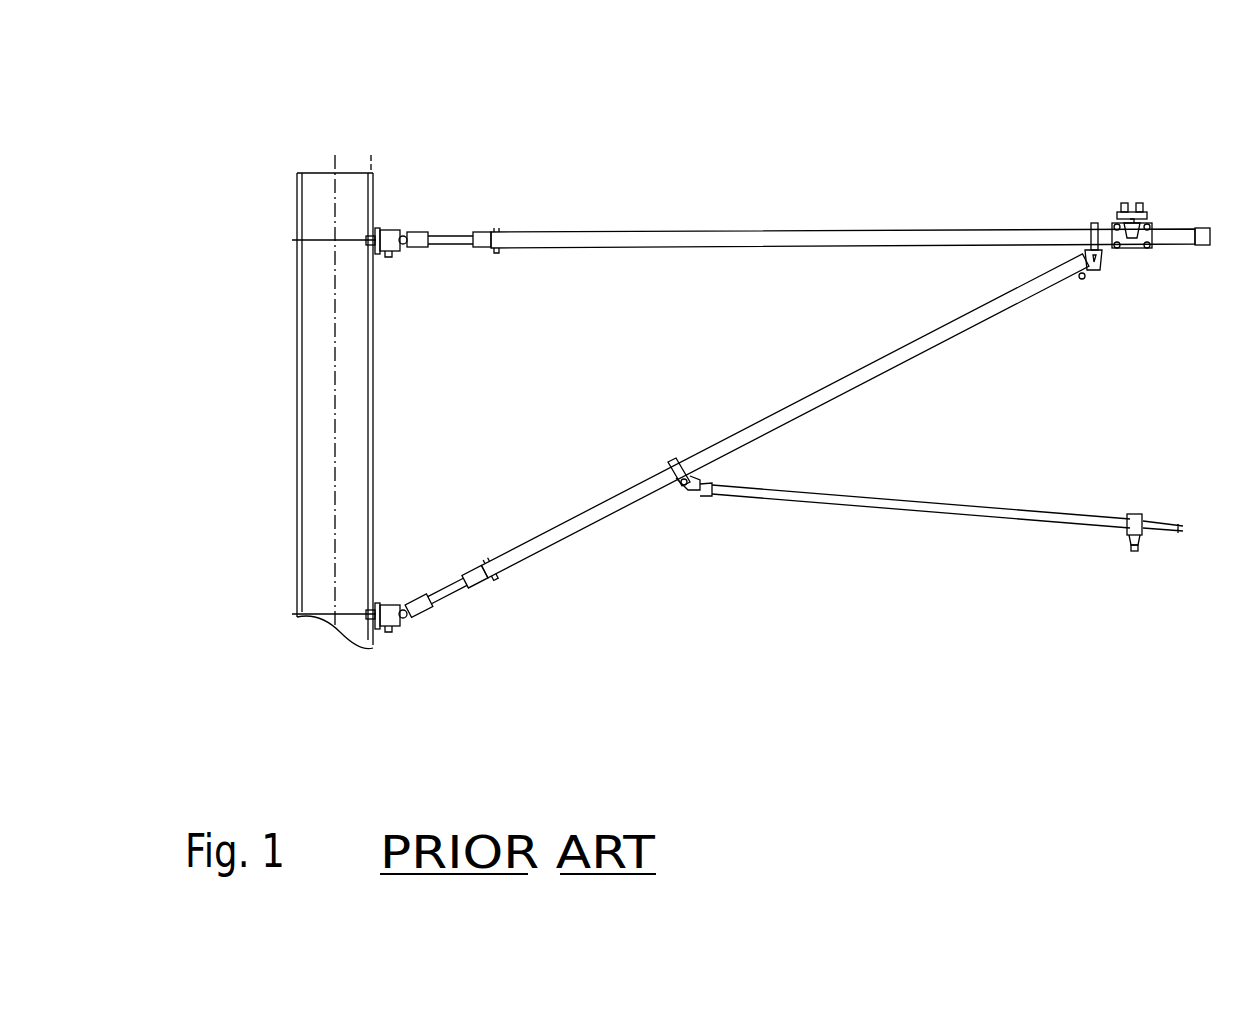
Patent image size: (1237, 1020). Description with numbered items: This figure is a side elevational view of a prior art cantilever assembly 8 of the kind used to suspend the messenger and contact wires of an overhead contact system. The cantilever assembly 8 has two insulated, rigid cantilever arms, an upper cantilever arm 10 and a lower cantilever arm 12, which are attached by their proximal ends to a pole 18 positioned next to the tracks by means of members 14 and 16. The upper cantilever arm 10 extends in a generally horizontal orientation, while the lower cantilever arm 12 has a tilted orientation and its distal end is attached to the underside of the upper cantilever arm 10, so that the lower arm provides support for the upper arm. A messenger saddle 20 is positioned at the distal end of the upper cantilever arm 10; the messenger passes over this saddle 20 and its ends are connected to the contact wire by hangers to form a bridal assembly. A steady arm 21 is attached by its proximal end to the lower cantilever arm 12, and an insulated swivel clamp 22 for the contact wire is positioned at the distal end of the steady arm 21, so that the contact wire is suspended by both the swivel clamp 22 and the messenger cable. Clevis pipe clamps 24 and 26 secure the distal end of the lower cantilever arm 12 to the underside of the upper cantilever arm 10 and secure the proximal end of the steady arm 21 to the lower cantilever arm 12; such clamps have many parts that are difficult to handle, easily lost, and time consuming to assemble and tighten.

The cantilever assembly 8 is at (550, 53).
The upper cantilever arm 10 is at (718, 231).
The lower cantilever arm 12 is at (800, 398).
The member 14 is at (383, 228).
The member 16 is at (390, 633).
The pole 18 is at (315, 404).
The messenger saddle 20 is at (1148, 215).
The steady arm 21 is at (880, 503).
The insulated swivel clamp 22 is at (1138, 513).
The clevis pipe clamp 24 is at (1088, 250).
The clevis pipe clamp 26 is at (683, 465).